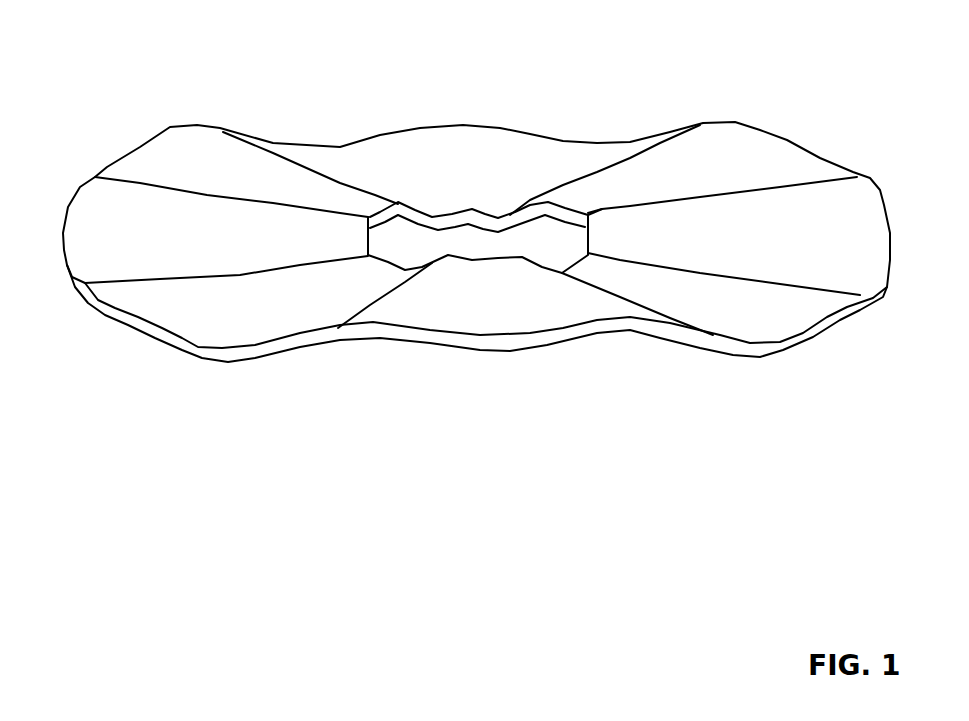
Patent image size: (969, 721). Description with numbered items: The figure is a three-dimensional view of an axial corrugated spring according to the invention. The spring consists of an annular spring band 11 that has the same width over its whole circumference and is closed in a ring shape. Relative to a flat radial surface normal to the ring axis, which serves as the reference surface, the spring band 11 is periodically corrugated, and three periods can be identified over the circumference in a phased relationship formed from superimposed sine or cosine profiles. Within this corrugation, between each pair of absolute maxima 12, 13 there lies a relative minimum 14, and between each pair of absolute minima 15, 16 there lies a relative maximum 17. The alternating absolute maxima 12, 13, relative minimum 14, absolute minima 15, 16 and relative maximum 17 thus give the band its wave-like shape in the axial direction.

The spring band 11 is at (127, 410).
The absolute maximum 12 is at (367, 370).
The absolute maximum 13 is at (620, 373).
The relative minimum 14 is at (497, 383).
The absolute minimum 15 is at (615, 113).
The absolute minimum 16 is at (322, 123).
The relative maximum 17 is at (473, 107).